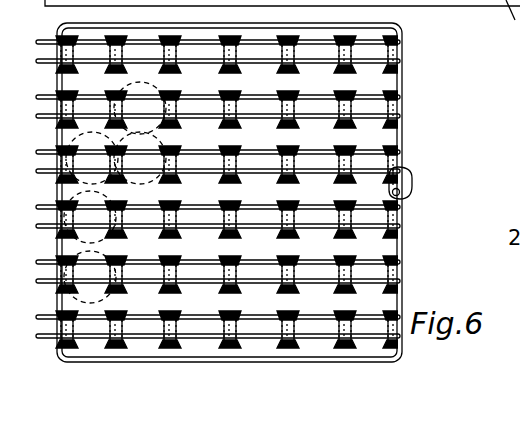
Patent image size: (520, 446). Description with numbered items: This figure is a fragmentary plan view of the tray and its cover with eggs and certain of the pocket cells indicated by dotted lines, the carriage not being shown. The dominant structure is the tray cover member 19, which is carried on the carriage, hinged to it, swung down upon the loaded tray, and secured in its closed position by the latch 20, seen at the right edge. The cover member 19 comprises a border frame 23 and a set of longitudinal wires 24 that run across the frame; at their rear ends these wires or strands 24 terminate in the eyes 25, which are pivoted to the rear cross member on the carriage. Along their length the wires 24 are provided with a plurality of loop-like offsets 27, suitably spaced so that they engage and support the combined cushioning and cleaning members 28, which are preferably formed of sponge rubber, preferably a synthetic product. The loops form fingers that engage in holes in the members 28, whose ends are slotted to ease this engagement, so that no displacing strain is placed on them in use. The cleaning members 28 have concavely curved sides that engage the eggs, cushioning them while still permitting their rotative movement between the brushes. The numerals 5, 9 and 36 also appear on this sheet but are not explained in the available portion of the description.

The container position 5 is at (84, 184).
The tray 9 is at (418, 0).
The tray cover member 19 is at (72, 92).
The latch 20 is at (412, 183).
The border frame 23 is at (403, 124).
The longitudinal wires 24 is at (200, 99).
The eyes 25 is at (43, 149).
The loop-like offsets 27 is at (337, 206).
The combined cushioning and cleaning members 28 is at (348, 258).
The tray wall 36 is at (470, 0).